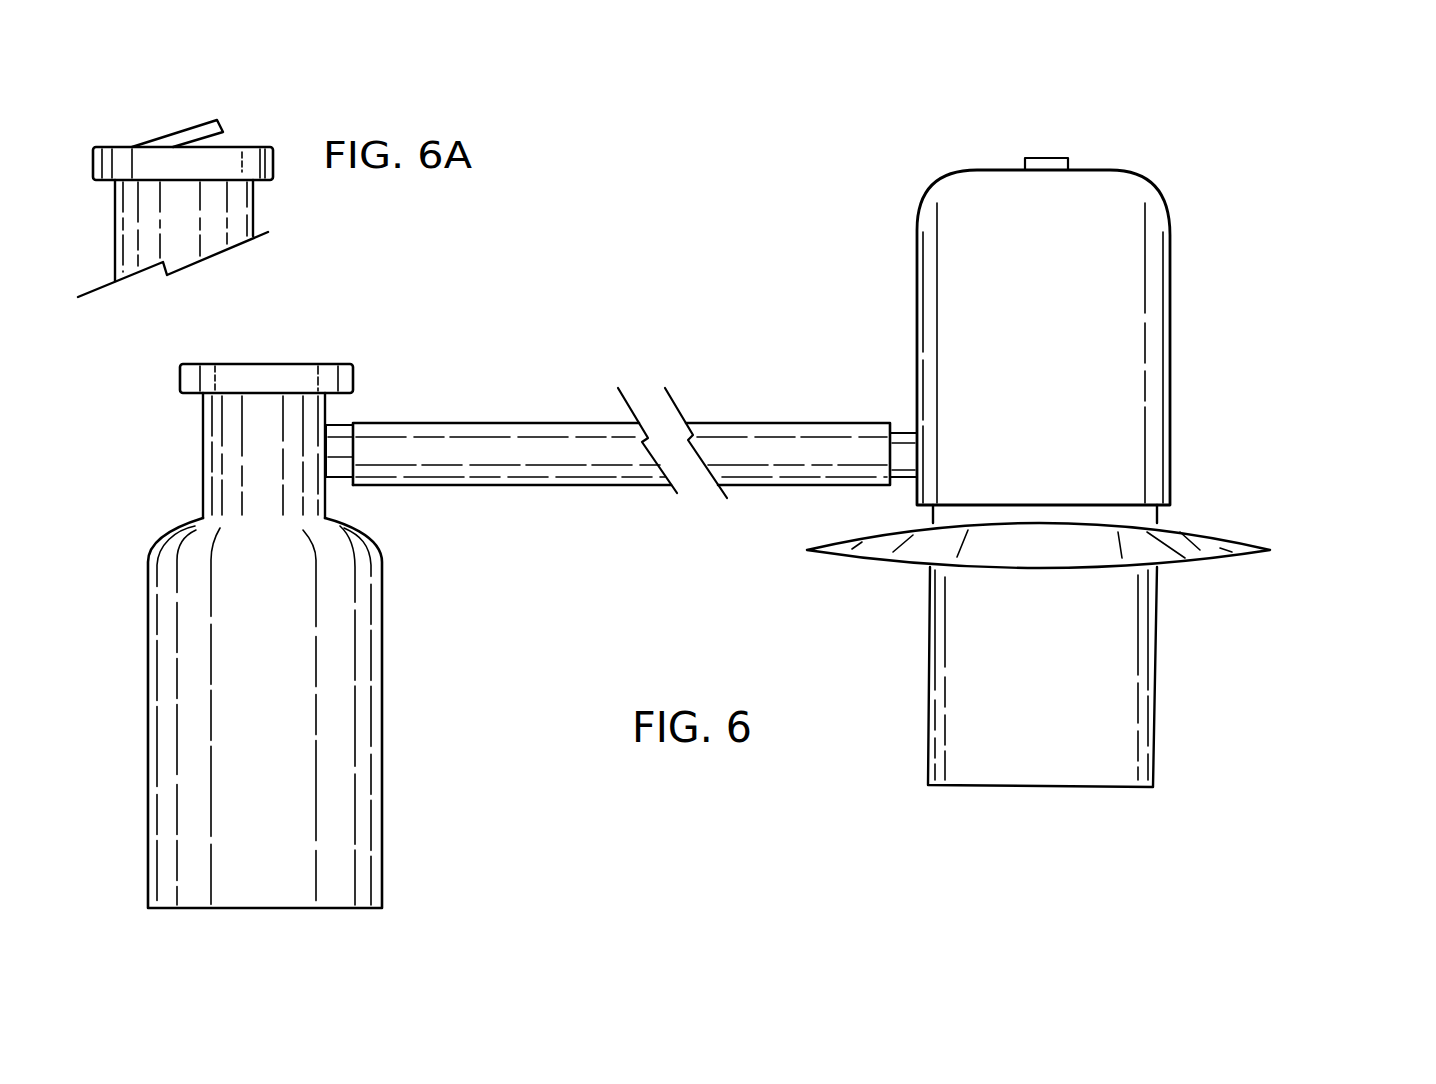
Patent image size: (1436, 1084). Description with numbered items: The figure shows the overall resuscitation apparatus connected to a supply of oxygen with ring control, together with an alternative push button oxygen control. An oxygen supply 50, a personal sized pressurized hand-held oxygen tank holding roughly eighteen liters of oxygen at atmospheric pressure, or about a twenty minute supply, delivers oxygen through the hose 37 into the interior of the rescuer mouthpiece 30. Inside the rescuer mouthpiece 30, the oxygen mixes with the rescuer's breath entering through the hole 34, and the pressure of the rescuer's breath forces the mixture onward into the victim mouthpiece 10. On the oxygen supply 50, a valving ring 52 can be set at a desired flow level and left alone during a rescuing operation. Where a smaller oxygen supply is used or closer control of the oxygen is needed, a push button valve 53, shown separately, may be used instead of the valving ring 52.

In FIG. 6, the victim mouthpiece 10 is at (1308, 533).
In FIG. 6, the rescuer mouthpiece 30 is at (1213, 158).
In FIG. 6, the hole 34 is at (1037, 158).
In FIG. 6, the hose 37 is at (700, 423).
In FIG. 6, the oxygen supply 50 is at (412, 540).
In FIG. 6, the valving ring 52 is at (356, 385).
In FIG. 6A, the push button valve 53 is at (166, 135).